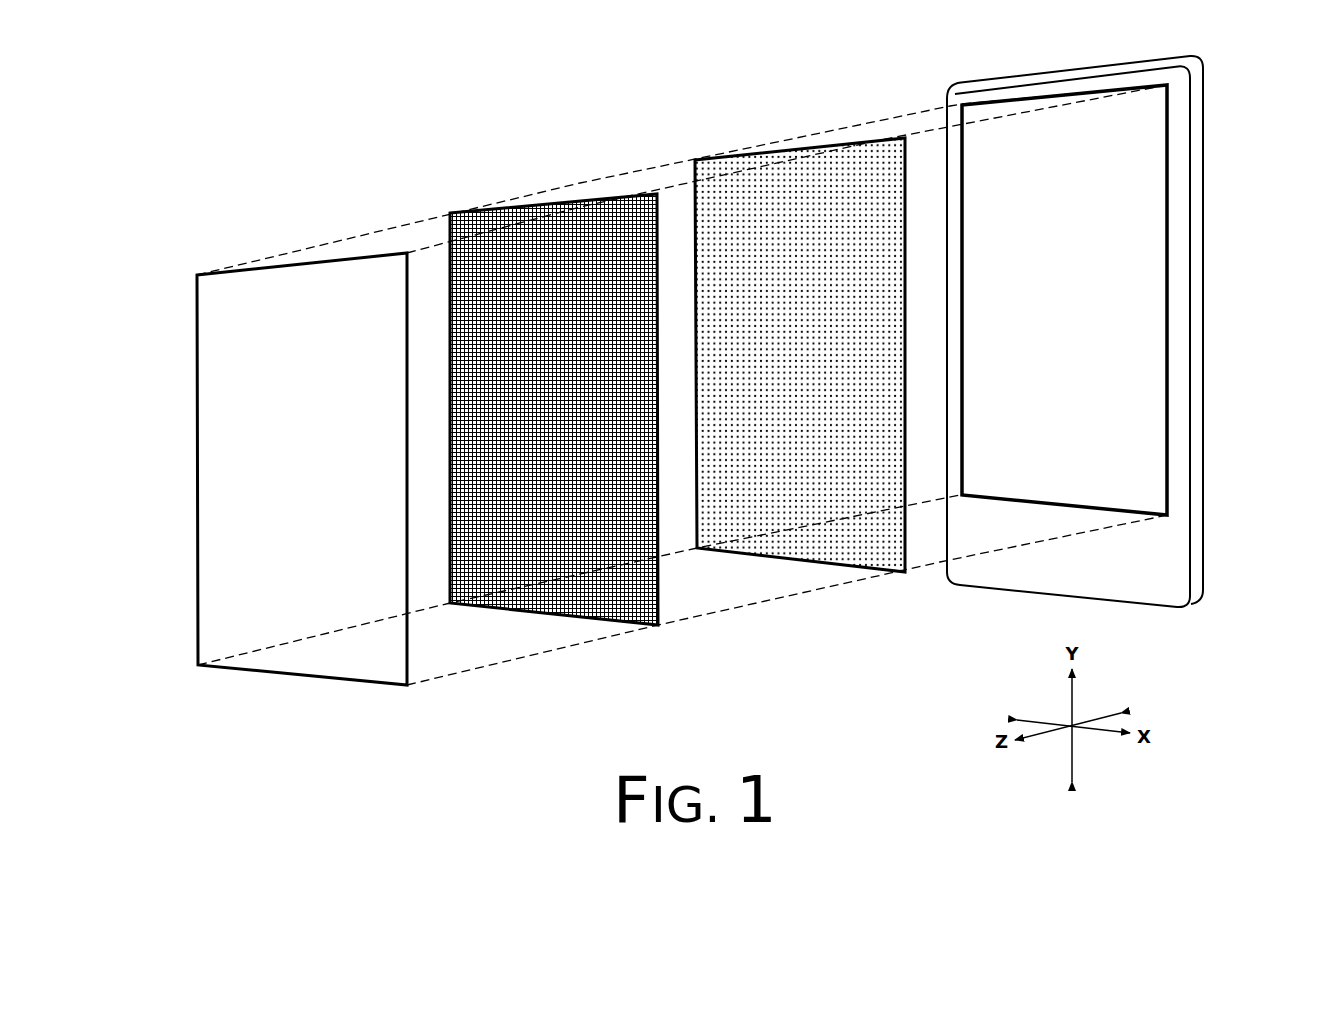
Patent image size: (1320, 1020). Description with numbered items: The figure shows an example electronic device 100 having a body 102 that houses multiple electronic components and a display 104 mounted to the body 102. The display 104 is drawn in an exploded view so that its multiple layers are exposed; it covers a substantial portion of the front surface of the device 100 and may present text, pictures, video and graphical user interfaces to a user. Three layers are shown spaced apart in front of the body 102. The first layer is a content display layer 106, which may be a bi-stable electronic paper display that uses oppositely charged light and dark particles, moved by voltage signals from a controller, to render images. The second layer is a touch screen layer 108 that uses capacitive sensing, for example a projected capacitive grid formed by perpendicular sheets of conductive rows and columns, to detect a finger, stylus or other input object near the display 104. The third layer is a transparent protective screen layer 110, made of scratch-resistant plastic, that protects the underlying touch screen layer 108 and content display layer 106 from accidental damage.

The electronic device 100 is at (1107, 317).
The body 102 is at (1205, 116).
The display 104 is at (905, 103).
The content display layer 106 is at (855, 572).
The touch screen layer 108 is at (617, 625).
The protective screen layer 110 is at (360, 683).